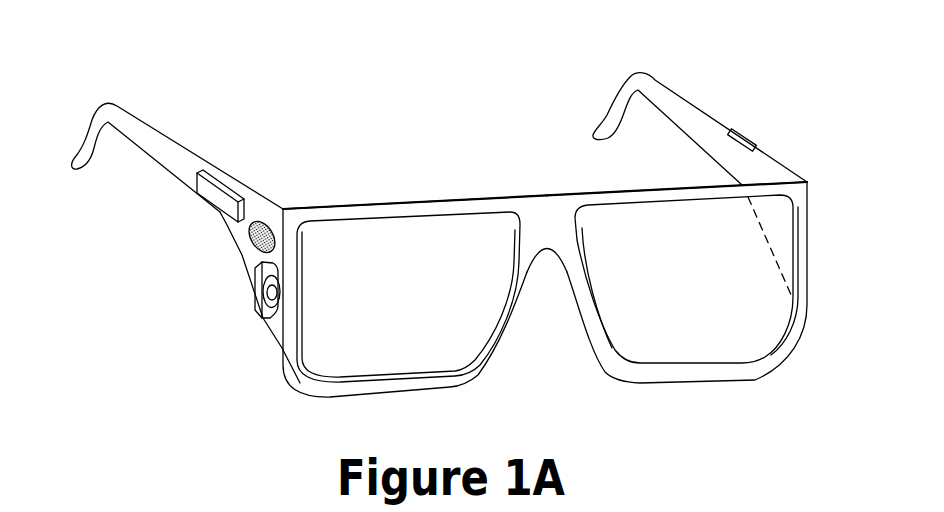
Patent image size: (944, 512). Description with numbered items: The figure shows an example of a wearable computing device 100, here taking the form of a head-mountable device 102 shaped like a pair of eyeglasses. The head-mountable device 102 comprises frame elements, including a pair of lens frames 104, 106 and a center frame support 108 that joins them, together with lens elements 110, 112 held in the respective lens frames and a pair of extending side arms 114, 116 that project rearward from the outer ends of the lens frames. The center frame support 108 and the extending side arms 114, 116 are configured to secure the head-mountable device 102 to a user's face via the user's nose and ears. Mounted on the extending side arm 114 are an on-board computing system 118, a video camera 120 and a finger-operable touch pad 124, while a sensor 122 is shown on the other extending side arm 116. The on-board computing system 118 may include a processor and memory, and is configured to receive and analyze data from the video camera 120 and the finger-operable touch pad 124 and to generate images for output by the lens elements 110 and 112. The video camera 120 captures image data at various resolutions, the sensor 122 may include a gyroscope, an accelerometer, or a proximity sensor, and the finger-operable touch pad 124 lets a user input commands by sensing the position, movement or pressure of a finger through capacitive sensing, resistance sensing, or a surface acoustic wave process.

The wearable computing device 100 is at (408, 95).
The head-mountable device 102 is at (673, 82).
The lens frame 104 is at (380, 208).
The lens frame 106 is at (618, 192).
The center frame support 108 is at (545, 218).
The lens element 110 is at (352, 360).
The lens element 112 is at (698, 343).
The extending side arm 114 is at (213, 172).
The extending side arm 116 is at (705, 113).
The on-board computing system 118 is at (213, 197).
The video camera 120 is at (250, 283).
The sensor 122 is at (748, 135).
The finger-operable touch pad 124 is at (250, 233).